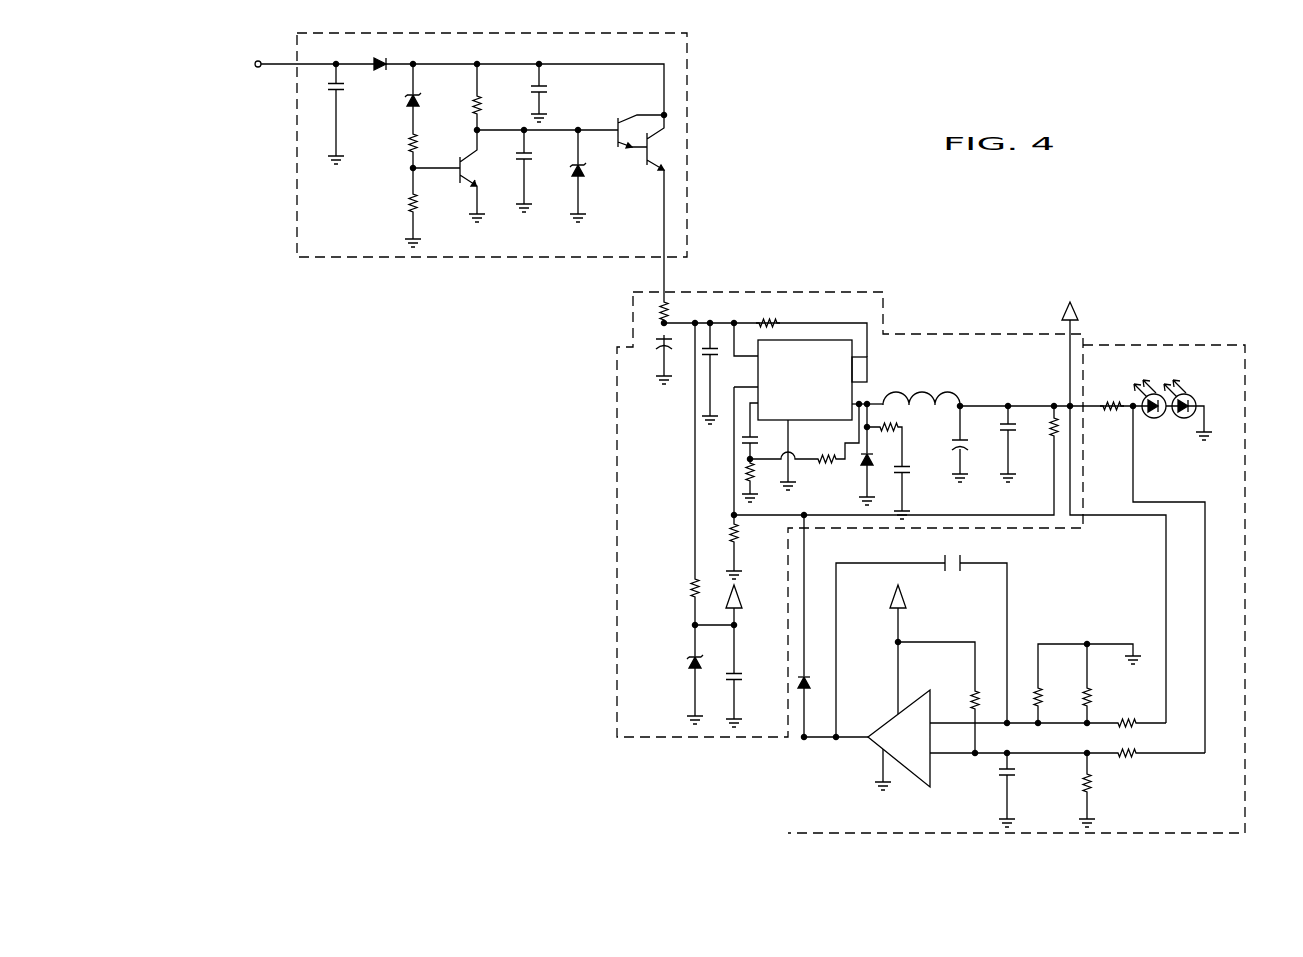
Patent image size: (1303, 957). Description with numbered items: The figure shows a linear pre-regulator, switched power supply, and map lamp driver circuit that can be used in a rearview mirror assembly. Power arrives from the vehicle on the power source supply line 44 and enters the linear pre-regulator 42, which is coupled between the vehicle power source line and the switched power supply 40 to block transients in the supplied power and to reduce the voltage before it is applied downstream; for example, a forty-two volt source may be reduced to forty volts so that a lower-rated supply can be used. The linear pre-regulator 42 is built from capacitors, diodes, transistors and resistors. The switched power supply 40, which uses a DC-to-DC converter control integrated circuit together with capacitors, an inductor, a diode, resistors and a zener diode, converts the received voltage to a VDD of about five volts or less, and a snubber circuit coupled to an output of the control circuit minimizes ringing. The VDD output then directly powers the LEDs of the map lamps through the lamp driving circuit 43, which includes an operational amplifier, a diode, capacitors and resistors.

The switched power supply 40 is at (843, 292).
The linear pre-regulator 42 is at (490, 33).
The lamp driving circuit 43 is at (1200, 345).
The power source supply line 44 is at (280, 63).